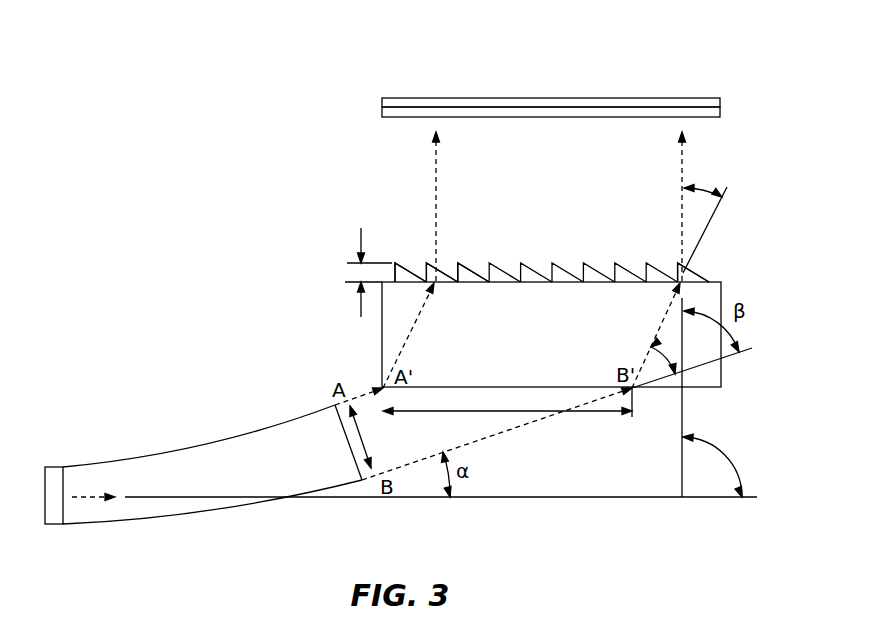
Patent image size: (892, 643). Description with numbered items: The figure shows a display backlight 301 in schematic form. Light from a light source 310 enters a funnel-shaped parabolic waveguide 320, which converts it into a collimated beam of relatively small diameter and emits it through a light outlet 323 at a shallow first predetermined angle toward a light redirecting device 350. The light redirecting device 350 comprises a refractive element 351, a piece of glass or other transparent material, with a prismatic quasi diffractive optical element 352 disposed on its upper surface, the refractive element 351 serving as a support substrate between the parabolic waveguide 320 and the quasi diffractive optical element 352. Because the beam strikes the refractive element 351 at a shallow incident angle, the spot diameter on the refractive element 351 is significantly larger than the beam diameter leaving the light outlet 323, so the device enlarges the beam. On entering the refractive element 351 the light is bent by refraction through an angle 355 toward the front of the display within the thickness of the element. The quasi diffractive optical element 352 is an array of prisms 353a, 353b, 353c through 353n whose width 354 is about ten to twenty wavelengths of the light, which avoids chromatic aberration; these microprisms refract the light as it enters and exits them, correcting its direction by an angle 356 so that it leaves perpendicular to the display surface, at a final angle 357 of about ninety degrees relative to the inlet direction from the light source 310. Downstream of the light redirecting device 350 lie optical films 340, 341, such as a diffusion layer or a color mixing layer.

The display backlight 301 is at (288, 57).
The light source 310 is at (52, 467).
The parabolic waveguide 320 is at (202, 445).
The light outlet 323 is at (330, 437).
The optical film 340 is at (721, 115).
The optical film 341 is at (721, 100).
The light redirecting device 350 is at (393, 178).
The refractive element 351 is at (382, 338).
The quasi diffractive optical element 352 is at (560, 237).
The prism 353a is at (397, 262).
The prism 353b is at (440, 270).
The prism 353c is at (473, 273).
The prism 353n is at (697, 274).
The width of the prisms 354 is at (360, 245).
The angle 355 is at (690, 358).
The angle 356 is at (703, 190).
The final angle 357 is at (735, 450).